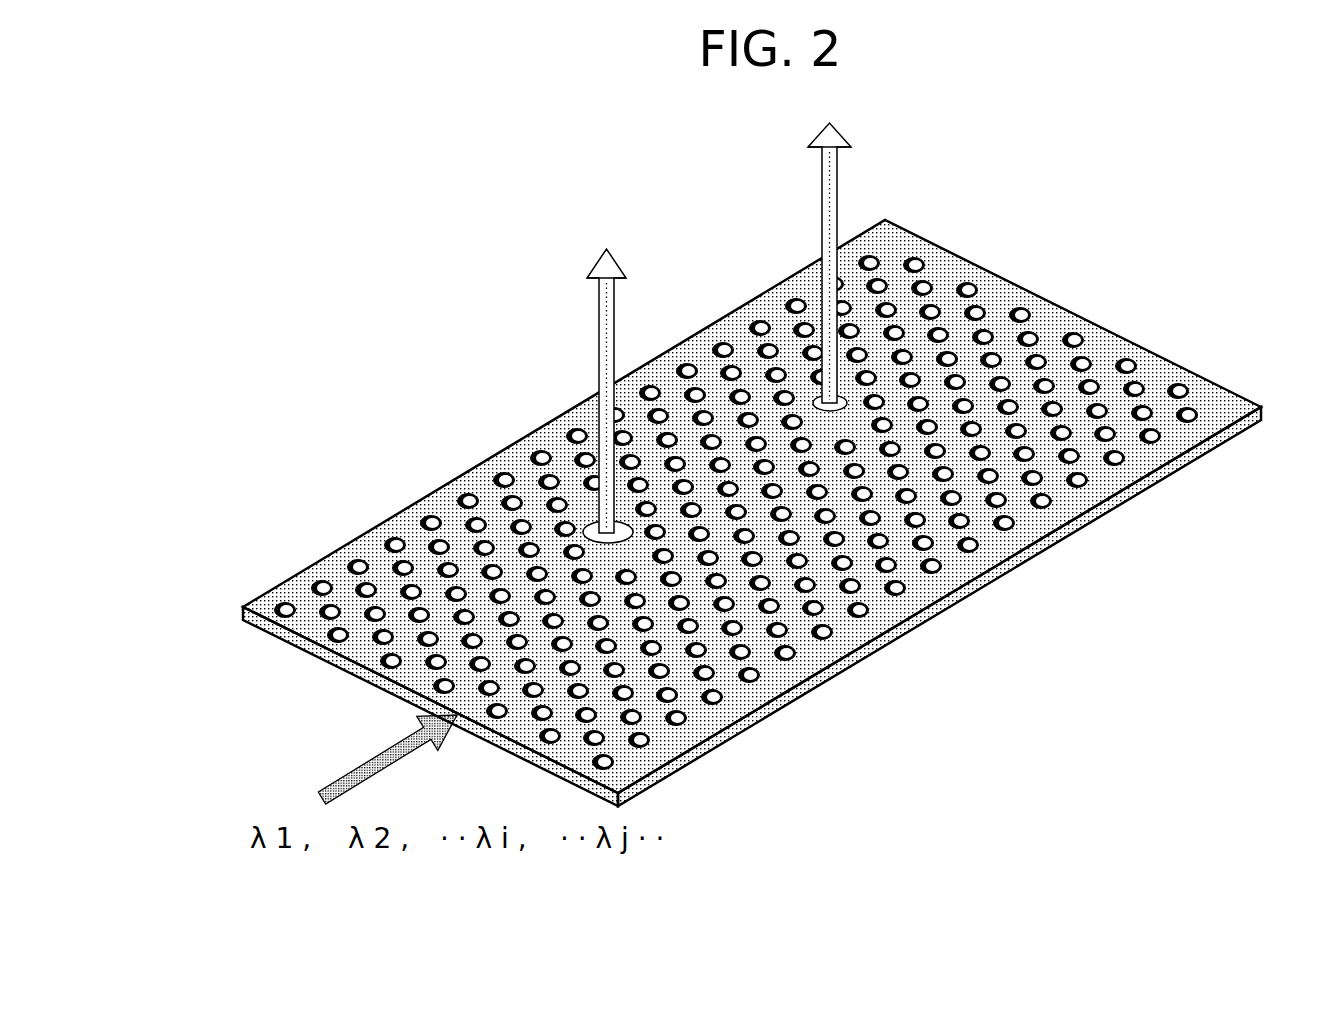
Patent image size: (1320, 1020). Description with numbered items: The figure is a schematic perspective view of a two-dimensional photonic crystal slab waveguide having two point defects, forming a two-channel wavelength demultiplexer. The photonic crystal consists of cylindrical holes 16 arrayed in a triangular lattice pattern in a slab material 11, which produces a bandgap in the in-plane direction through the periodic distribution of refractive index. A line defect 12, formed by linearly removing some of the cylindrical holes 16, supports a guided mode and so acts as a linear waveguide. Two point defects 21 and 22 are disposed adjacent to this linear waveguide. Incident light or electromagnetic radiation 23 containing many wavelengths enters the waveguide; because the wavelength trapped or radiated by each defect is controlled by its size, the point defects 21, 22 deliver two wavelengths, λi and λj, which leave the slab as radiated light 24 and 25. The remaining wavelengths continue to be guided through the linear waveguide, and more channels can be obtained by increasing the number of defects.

The slab material 11 is at (960, 598).
The line defect 12 is at (1040, 357).
The cylindrical holes 16 is at (636, 743).
The point defect 21 is at (604, 528).
The point defect 22 is at (818, 397).
The incident light or electromagnetic radiation 23 is at (358, 768).
The radiated light of wavelength λi 24 is at (614, 363).
The radiated light of wavelength λj 25 is at (837, 197).